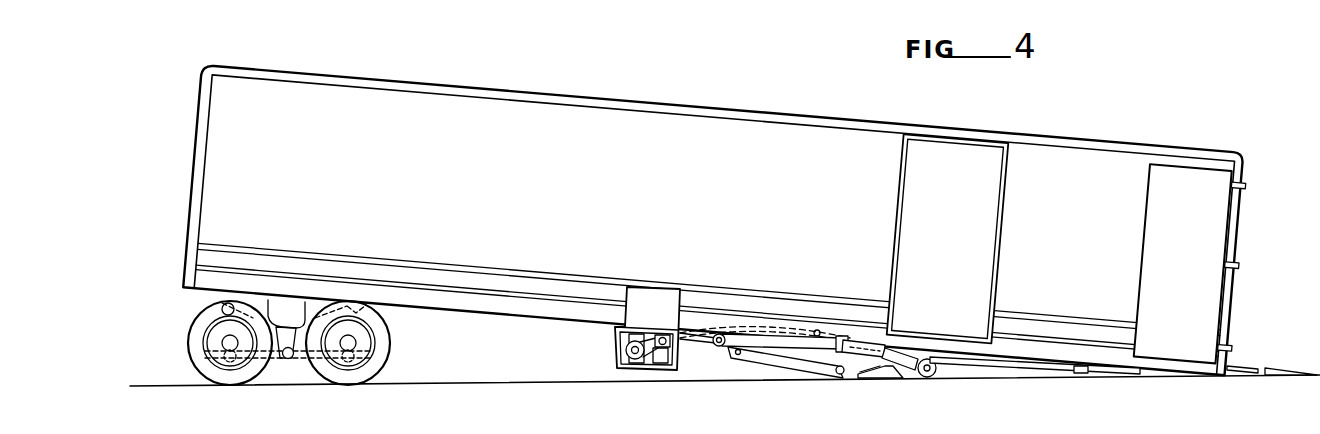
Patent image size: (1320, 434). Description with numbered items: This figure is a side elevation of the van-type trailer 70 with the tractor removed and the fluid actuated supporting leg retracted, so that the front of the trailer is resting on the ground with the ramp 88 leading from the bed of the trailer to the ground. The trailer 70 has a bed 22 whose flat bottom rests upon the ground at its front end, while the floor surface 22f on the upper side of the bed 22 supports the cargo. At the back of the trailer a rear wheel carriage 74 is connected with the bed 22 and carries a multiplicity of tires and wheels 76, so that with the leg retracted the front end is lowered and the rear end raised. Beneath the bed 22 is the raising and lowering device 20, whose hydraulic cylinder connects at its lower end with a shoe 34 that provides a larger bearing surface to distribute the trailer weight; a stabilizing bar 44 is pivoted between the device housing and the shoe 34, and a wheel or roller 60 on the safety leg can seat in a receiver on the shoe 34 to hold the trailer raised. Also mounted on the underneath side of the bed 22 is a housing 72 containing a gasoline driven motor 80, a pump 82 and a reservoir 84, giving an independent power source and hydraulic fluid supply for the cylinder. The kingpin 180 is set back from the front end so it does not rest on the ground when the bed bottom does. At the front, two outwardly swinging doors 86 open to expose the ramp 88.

The van-type trailer 70 is at (1249, 155).
The front doors 86 is at (1196, 247).
The tires and wheels 76 is at (328, 375).
The rear wheel carriage 74 is at (286, 310).
The housing 72 is at (615, 340).
The gasoline driven motor 80 is at (628, 344).
The pump 82 is at (662, 336).
The reservoir 84 is at (661, 364).
The stabilizing bar 44 is at (762, 356).
The raising and lowering device 20 is at (871, 340).
The wheel or roller 60 is at (937, 367).
The bed 22 is at (1024, 347).
The shoe 34 is at (894, 373).
The kingpin 180 is at (1080, 375).
The floor surface 22f is at (1223, 376).
The ramp 88 is at (1244, 366).